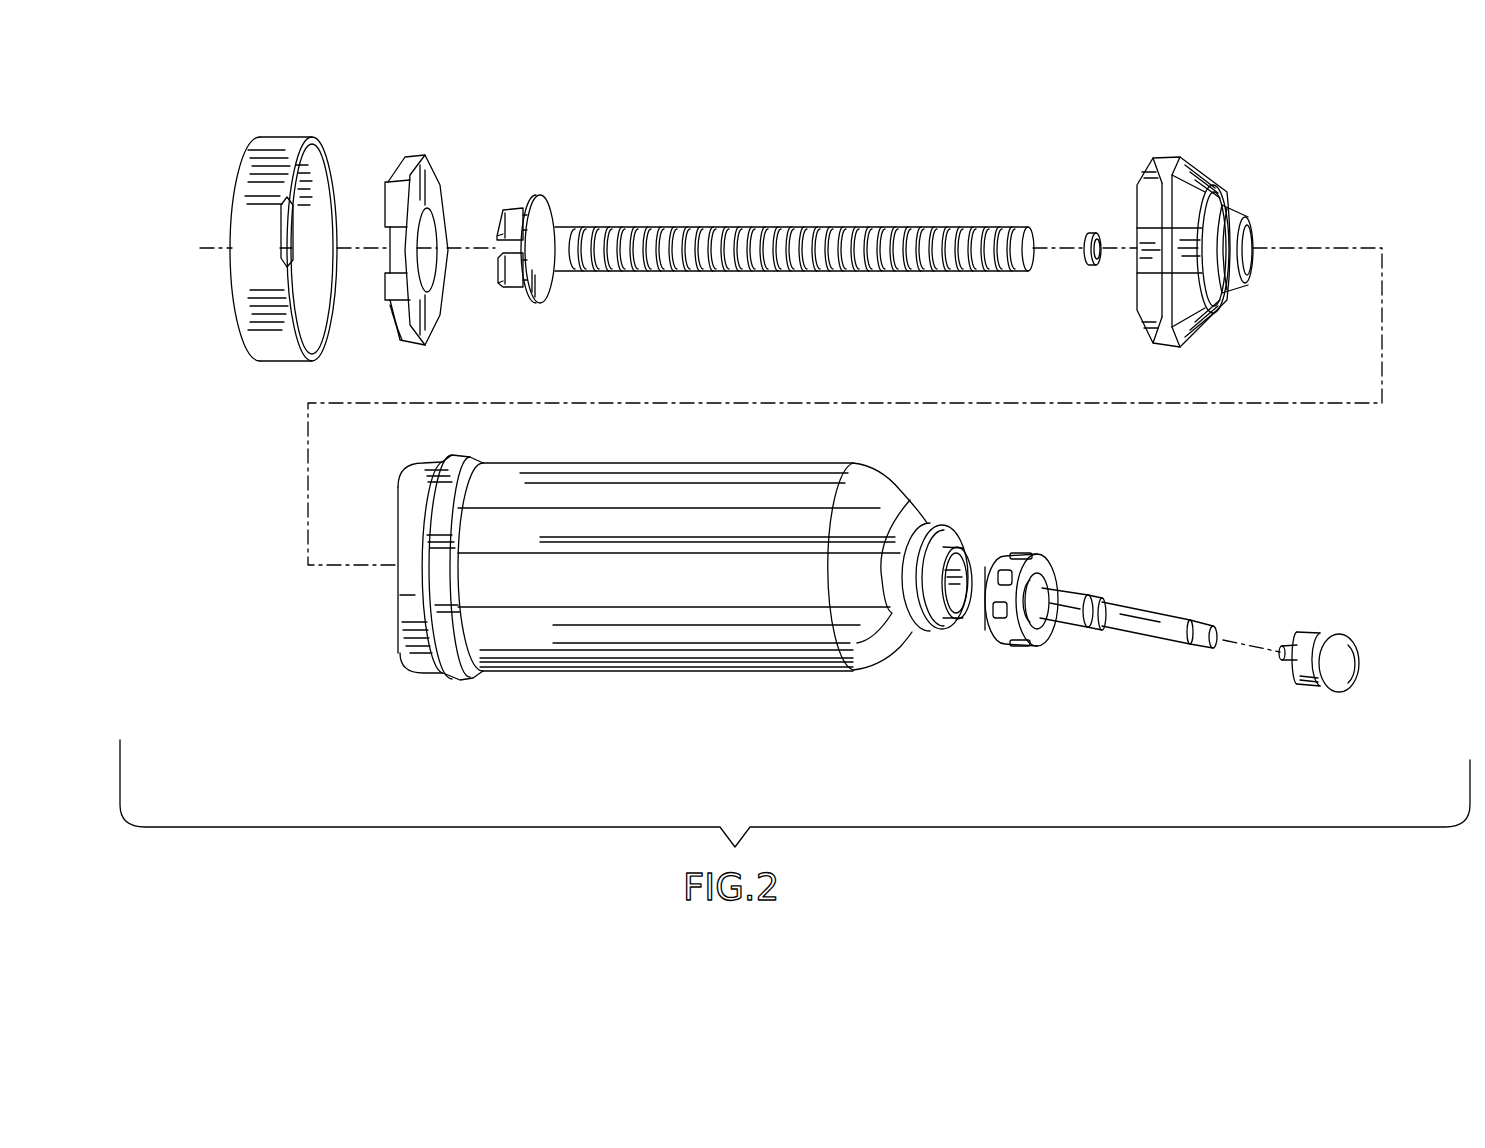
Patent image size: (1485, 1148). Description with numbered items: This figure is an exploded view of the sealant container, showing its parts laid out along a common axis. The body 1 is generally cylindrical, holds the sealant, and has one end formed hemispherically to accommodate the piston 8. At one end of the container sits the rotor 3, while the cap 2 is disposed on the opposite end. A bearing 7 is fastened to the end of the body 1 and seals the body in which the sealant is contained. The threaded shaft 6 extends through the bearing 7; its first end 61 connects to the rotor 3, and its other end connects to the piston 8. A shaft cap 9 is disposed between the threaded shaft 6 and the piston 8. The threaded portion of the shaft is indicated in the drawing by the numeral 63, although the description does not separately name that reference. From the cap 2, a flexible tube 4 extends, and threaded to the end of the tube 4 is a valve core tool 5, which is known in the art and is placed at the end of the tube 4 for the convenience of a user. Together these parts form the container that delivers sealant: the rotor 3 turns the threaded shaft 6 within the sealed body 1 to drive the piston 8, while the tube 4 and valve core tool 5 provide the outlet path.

The body 1 is at (602, 670).
The cap 2 is at (1037, 550).
The rotor 3 is at (253, 357).
The flexible tube 4 is at (1140, 615).
The valve core tool 5 is at (1343, 633).
The threaded shaft 6 is at (523, 290).
The first end 61 is at (541, 196).
The threaded shaft 63 is at (760, 273).
The bearing 7 is at (423, 153).
The piston 8 is at (1202, 317).
The shaft cap 9 is at (1092, 268).